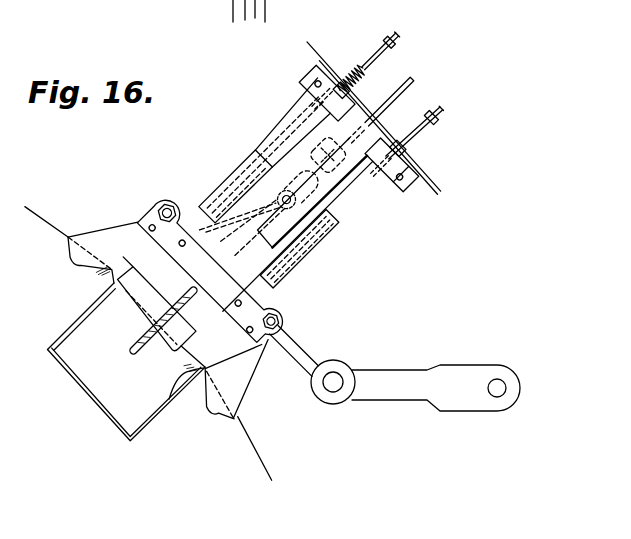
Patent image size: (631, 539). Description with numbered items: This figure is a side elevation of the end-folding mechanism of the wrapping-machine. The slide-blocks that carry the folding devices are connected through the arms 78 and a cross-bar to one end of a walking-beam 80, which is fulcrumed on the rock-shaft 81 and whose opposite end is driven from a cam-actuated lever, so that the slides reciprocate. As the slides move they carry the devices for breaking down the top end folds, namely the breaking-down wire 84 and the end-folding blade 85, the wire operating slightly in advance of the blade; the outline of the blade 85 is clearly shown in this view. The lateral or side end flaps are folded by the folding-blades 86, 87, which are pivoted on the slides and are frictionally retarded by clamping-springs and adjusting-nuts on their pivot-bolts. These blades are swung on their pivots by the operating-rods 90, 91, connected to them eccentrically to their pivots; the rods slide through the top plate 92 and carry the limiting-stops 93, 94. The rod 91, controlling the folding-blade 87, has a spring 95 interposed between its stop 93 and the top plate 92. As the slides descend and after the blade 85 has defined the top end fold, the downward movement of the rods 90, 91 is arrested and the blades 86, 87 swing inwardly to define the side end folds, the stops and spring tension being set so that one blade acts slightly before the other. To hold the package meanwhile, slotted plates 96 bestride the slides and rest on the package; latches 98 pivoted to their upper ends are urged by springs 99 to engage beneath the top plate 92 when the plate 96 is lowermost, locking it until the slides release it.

The arms 78 is at (303, 265).
The walking-beam 80 is at (303, 347).
The rock-shaft 81 is at (333, 385).
The breaking-down wire 84 is at (130, 327).
The end-folding blade 85 is at (178, 380).
The folding-blade 86 is at (250, 363).
The folding-blade 87 is at (103, 230).
The operating-rod 90 is at (438, 113).
The operating-rod 91 is at (398, 44).
The top plate 92 is at (410, 150).
The limiting-stop 93 is at (392, 40).
The limiting-stop 94 is at (322, 68).
The spring 95 is at (368, 78).
The slotted plate 96 is at (362, 186).
The latch 98 is at (416, 80).
The spring 99 is at (402, 190).